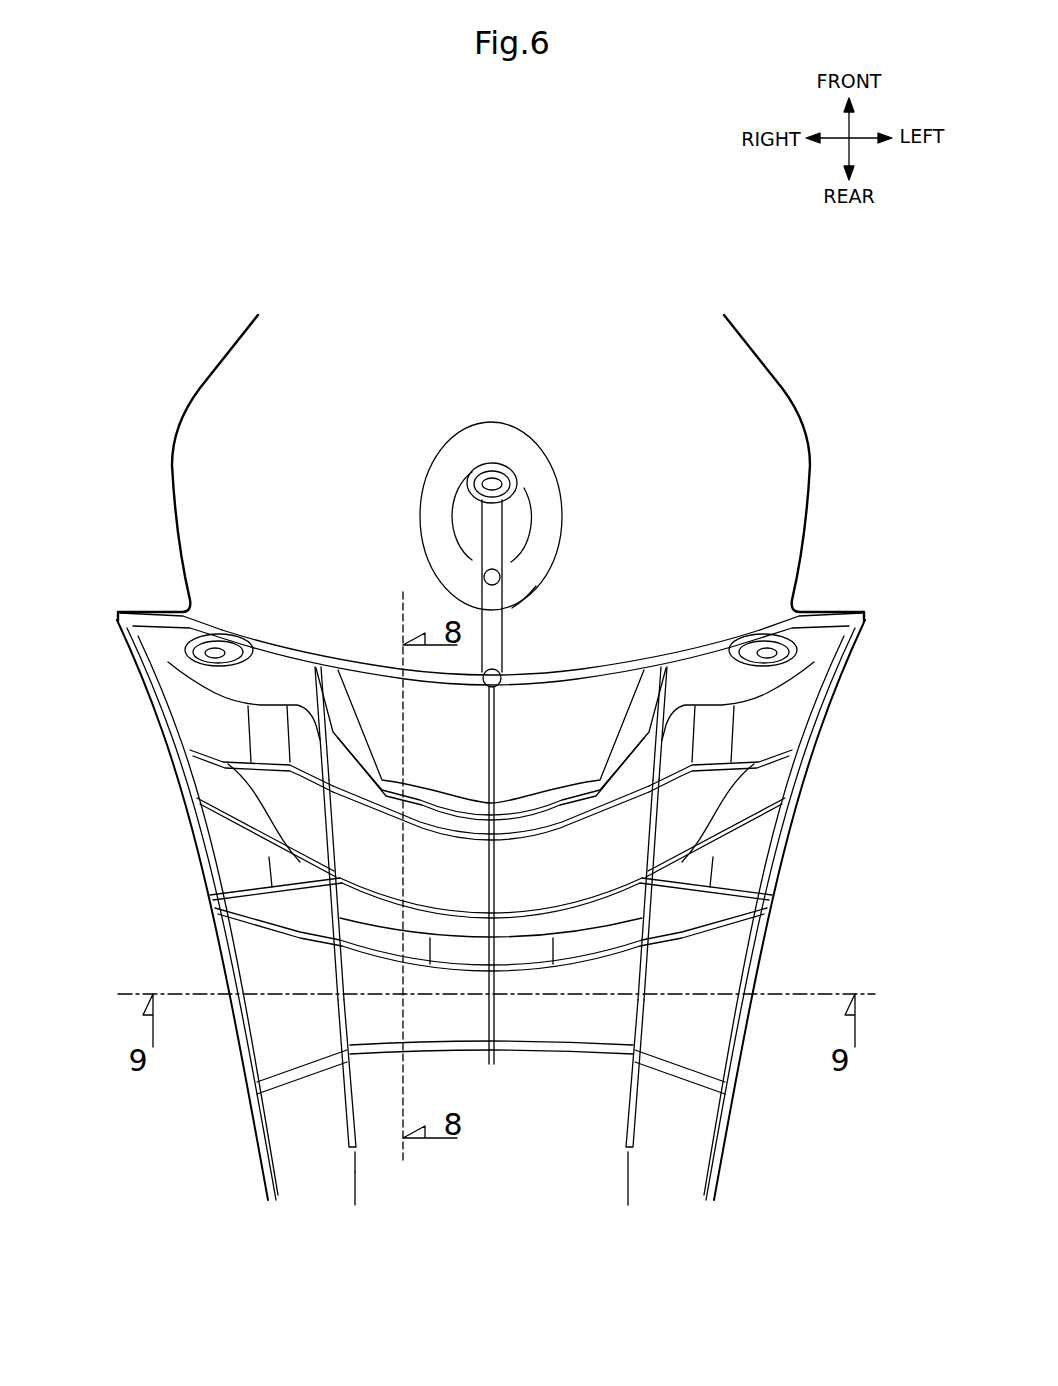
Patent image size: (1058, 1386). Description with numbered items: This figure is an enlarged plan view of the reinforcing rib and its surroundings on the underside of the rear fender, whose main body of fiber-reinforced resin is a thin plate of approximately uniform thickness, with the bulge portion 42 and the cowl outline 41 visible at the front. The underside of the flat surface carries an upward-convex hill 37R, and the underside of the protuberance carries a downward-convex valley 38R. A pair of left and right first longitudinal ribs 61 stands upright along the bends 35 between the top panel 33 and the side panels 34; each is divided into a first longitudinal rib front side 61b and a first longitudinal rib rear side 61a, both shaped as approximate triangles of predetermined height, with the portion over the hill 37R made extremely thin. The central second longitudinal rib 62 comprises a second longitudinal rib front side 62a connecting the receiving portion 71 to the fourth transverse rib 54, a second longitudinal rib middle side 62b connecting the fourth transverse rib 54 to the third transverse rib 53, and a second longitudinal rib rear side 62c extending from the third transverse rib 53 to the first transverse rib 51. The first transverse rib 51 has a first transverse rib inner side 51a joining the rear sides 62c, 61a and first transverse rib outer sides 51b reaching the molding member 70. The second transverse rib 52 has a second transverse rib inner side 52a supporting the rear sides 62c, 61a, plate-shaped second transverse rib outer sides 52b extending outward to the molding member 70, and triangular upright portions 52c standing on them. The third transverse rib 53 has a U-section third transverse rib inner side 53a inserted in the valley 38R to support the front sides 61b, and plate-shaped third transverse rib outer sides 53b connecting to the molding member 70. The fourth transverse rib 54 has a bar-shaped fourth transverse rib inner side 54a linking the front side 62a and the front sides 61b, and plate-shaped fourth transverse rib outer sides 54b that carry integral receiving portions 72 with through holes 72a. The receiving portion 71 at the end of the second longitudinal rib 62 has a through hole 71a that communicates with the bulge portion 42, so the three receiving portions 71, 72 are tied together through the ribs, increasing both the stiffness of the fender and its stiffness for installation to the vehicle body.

The top panel 33 is at (378, 1153).
The side panels 34 is at (489, 910).
The bends 35 is at (353, 1190).
The hill 37R is at (613, 853).
The valley 38R is at (383, 782).
The front cowl 41 is at (758, 392).
The bulge portion 42 is at (450, 458).
The first transverse rib 51 is at (491, 1087).
The first transverse rib inner side 51a is at (573, 1056).
The first transverse rib outer sides 51b is at (305, 1072).
The second transverse rib 52 is at (490, 917).
The second transverse rib inner side 52a is at (525, 964).
The second transverse rib outer sides 52b is at (302, 937).
The upright portions 52c is at (228, 886).
The third transverse rib 53 is at (491, 765).
The third transverse rib inner side 53a is at (456, 816).
The third transverse rib outer sides 53b is at (236, 760).
The fourth transverse rib 54 is at (491, 617).
The fourth transverse rib inner side 54a is at (363, 652).
The fourth transverse rib outer sides 54b is at (273, 642).
The first longitudinal ribs 61 is at (491, 907).
The first longitudinal rib rear side 61a is at (343, 1018).
The first longitudinal rib front side 61b is at (313, 690).
The second longitudinal rib 62 is at (520, 782).
The second longitudinal rib front side 62a is at (498, 593).
The second longitudinal rib middle side 62b is at (498, 688).
The second longitudinal rib rear side 62c is at (488, 972).
The molding member 70 is at (732, 1147).
The receiving portion 71 is at (566, 489).
The through hole 71a is at (493, 490).
The receiving portions 72 is at (490, 687).
The through holes 72a is at (217, 662).